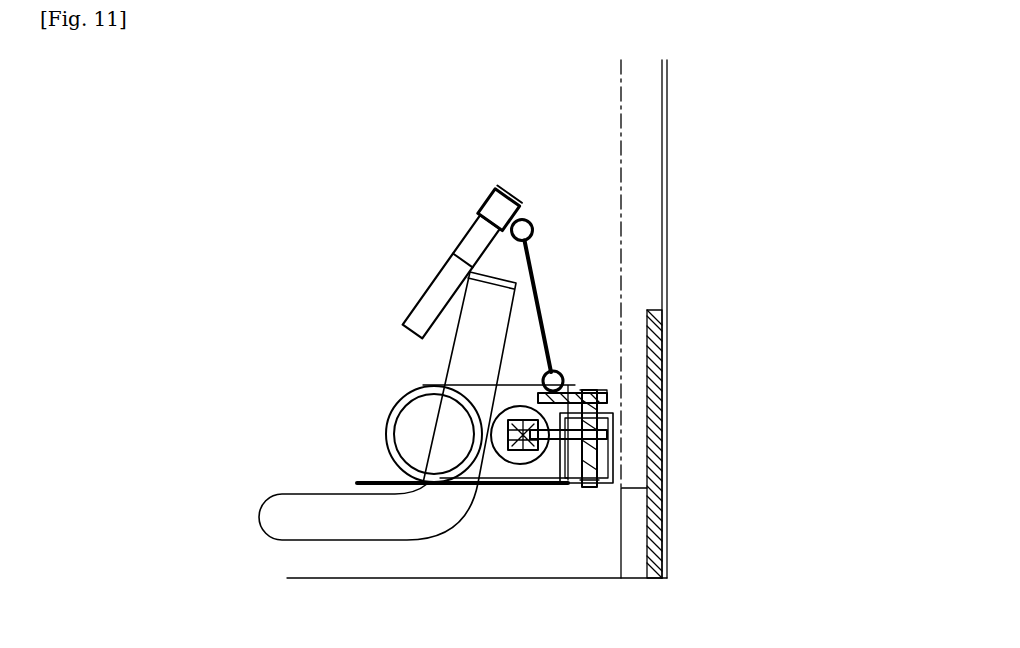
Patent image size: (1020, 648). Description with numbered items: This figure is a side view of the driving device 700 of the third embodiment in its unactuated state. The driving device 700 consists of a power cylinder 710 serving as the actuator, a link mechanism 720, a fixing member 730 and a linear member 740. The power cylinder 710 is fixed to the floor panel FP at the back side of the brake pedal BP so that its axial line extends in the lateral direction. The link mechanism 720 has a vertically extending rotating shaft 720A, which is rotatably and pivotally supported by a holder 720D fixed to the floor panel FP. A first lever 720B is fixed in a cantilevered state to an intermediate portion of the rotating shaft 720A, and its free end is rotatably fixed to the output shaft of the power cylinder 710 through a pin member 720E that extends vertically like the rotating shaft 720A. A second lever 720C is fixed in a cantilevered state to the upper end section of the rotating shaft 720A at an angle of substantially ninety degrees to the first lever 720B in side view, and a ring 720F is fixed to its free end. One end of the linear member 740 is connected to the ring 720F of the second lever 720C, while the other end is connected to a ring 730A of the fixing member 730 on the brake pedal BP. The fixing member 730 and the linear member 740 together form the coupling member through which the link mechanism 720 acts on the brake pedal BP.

The driving device 700 is at (378, 303).
The power cylinder 710 is at (398, 407).
The link mechanism 720 is at (612, 437).
The rotating shaft 720A is at (589, 490).
The first lever 720B is at (552, 435).
The second lever 720C is at (605, 398).
The holder 720D is at (613, 467).
The pin member 720E is at (523, 452).
The ring 720F is at (563, 380).
The fixing member 730 is at (487, 200).
The ring 730A is at (532, 222).
The linear member 740 is at (546, 298).
The brake pedal BP is at (455, 253).
The floor panel FP is at (380, 482).